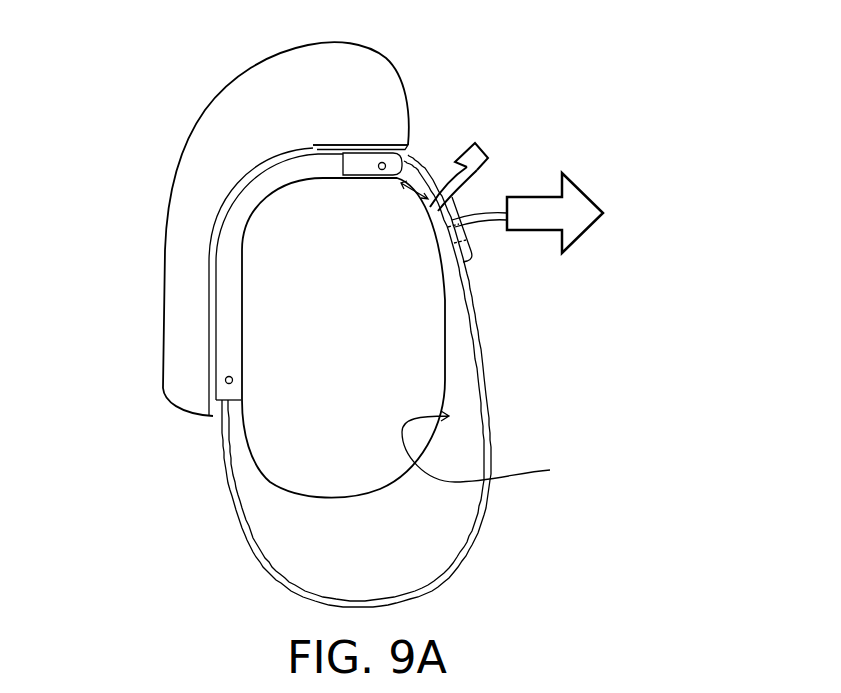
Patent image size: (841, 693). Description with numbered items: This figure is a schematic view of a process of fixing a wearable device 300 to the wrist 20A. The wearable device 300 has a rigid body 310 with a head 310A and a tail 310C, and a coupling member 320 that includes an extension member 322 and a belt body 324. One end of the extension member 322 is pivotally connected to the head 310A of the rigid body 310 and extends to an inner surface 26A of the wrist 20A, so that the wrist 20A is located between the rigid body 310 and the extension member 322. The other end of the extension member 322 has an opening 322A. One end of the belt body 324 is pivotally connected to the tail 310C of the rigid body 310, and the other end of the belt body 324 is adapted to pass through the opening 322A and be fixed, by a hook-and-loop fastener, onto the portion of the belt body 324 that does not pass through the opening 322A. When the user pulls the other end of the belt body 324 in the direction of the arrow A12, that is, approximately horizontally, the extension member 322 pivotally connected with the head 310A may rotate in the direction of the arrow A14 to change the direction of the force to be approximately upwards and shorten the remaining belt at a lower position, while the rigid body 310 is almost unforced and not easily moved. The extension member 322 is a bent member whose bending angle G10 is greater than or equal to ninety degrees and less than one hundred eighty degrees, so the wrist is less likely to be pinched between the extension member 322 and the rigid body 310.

The wearable device 300 is at (163, 153).
The rigid body 310 is at (270, 63).
The head 310A is at (390, 96).
The tail 310C is at (181, 348).
The coupling member 320 is at (601, 307).
The extension member 322 is at (468, 262).
The opening 322A is at (479, 234).
The belt body 324 is at (483, 362).
The wrist 20A is at (286, 465).
The inner surface 26A is at (497, 447).
The bending angle G10 is at (407, 200).
The arrow A12 is at (580, 208).
The arrow A14 is at (483, 174).